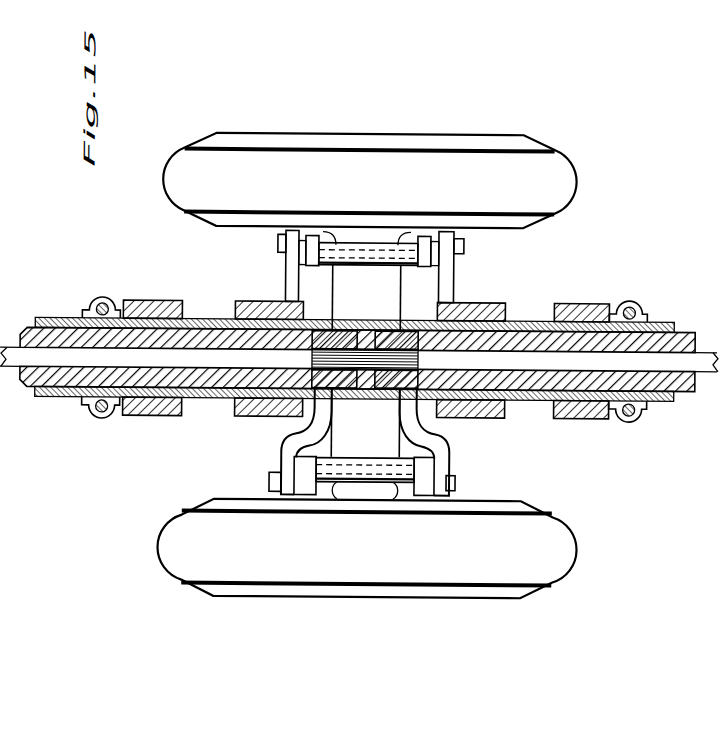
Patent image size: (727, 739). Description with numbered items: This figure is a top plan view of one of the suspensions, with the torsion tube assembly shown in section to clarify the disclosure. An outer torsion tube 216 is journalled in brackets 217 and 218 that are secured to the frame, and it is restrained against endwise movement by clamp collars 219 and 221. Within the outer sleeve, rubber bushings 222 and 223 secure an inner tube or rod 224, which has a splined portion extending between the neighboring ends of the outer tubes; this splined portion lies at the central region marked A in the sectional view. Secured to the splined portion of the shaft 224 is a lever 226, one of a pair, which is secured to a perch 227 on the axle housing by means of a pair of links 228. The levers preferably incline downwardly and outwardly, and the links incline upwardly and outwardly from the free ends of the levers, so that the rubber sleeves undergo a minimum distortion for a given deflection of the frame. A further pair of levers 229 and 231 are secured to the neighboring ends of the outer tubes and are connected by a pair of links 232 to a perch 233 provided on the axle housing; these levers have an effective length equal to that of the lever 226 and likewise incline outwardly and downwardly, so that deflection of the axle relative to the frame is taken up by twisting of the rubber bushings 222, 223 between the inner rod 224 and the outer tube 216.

The outer torsion tube 216 is at (365, 383).
The bracket 217 is at (152, 386).
The bracket 218 is at (581, 388).
The clamp collar 219 is at (96, 384).
The clamp collar 221 is at (642, 387).
The rubber bushing 222 is at (355, 296).
The rubber bushing 223 is at (367, 331).
The inner tube or rod 224 is at (363, 403).
The lever 226 is at (355, 443).
The perch 227 is at (361, 511).
The link 228 is at (363, 511).
The lever 229 is at (283, 266).
The lever 231 is at (450, 267).
The link 232 is at (372, 215).
The perch 233 is at (371, 215).
The hub A is at (365, 361).